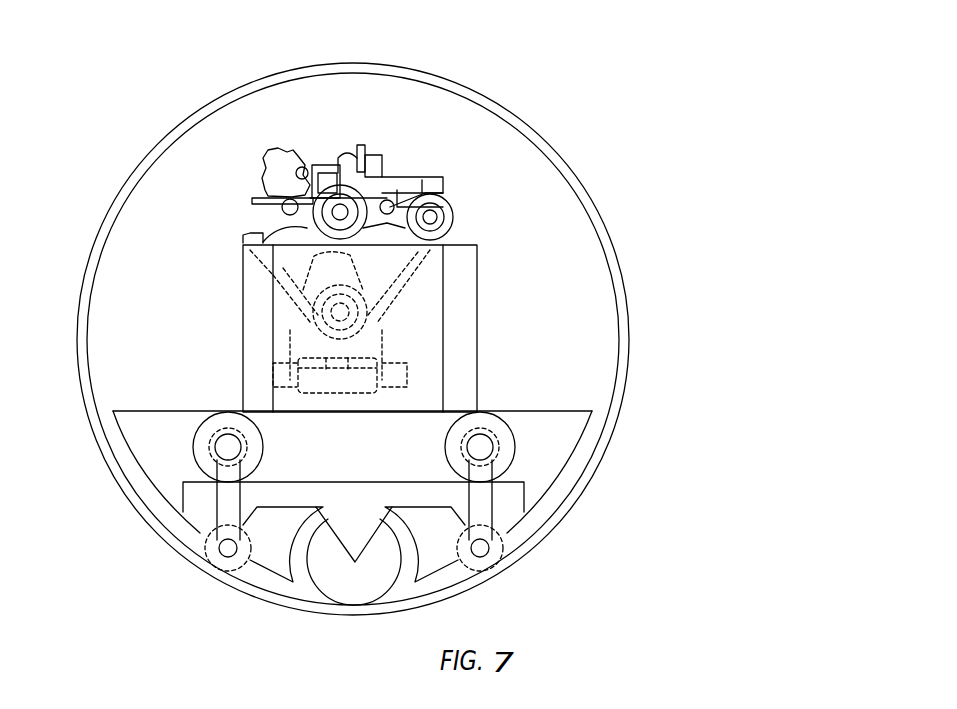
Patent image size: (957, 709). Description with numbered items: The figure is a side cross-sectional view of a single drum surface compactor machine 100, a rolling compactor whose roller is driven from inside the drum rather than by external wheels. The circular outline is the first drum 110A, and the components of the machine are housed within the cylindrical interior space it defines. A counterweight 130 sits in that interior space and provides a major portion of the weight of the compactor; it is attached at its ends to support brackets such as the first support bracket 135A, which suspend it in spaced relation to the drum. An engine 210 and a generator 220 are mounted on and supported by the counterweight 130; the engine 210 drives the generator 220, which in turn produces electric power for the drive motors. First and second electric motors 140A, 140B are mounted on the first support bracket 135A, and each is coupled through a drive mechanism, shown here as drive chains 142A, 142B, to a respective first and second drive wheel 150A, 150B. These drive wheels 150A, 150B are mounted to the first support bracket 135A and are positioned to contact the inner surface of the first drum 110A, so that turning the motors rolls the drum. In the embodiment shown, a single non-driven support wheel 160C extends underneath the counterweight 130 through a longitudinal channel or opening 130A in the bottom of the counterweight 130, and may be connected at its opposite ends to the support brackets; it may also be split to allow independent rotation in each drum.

The surface compactor machine 100 is at (706, 68).
The first drum 110A is at (108, 210).
The engine 210 is at (437, 212).
The generator 220 is at (470, 328).
The counterweight 130 is at (548, 458).
The longitudinal channel or opening 130A is at (403, 578).
The single non-driven support wheel 160C is at (331, 588).
The first electric motor 140A is at (215, 423).
The second electric motor 140B is at (507, 430).
The drive chain 142A is at (212, 512).
The drive chain 142B is at (492, 502).
The first support bracket 135A is at (205, 535).
The first drive wheel 150A is at (228, 582).
The second drive wheel 150B is at (488, 567).